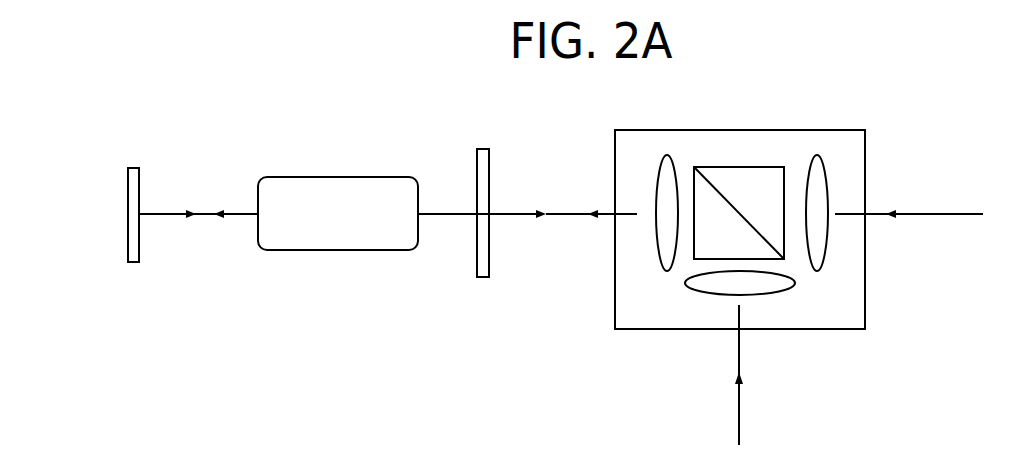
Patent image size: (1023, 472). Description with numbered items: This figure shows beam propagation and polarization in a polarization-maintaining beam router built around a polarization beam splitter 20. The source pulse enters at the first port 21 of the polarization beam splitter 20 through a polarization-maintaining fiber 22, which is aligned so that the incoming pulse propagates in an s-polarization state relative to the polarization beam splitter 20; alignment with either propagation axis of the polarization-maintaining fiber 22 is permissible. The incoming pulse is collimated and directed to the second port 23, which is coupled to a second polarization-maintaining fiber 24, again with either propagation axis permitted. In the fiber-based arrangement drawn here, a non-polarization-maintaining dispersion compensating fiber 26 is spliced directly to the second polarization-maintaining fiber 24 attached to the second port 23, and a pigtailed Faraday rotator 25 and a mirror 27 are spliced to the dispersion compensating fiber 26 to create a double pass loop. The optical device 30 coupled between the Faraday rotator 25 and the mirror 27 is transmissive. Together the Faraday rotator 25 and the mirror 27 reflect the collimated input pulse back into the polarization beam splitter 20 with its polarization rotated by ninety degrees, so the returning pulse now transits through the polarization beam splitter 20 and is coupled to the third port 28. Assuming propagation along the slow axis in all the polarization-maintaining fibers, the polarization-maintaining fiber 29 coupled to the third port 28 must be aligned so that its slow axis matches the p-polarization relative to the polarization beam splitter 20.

The polarization beam splitter 20 is at (855, 130).
The first port 21 is at (741, 330).
The polarization-maintaining fiber 22 is at (741, 418).
The second port 23 is at (608, 214).
The second polarization-maintaining fiber 24 is at (578, 217).
The Faraday rotator 25 is at (483, 282).
The dispersion compensating fiber 26 is at (513, 217).
The mirror 27 is at (133, 168).
The third port 28 is at (870, 214).
The polarization-maintaining fiber 29 is at (955, 214).
The optical device 30 is at (335, 177).